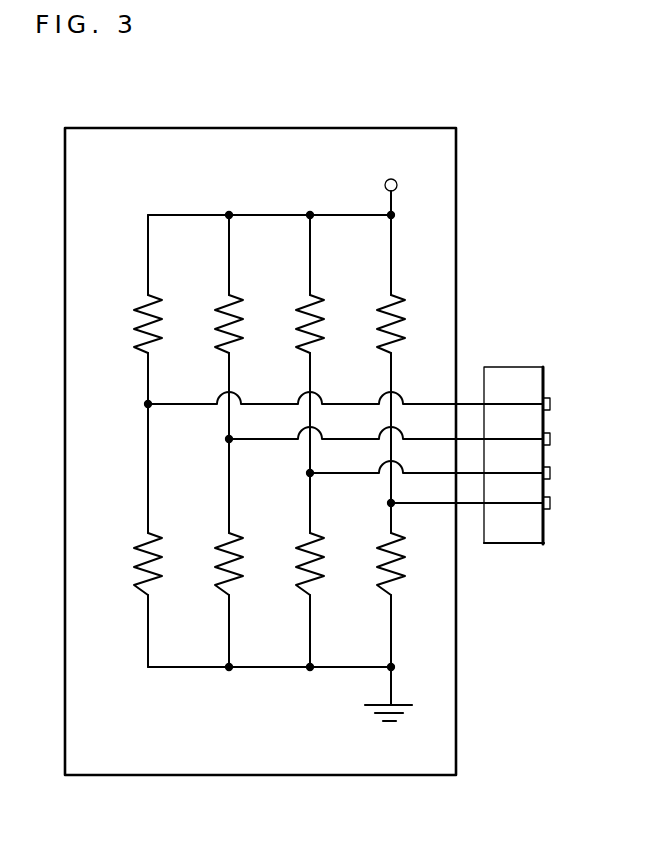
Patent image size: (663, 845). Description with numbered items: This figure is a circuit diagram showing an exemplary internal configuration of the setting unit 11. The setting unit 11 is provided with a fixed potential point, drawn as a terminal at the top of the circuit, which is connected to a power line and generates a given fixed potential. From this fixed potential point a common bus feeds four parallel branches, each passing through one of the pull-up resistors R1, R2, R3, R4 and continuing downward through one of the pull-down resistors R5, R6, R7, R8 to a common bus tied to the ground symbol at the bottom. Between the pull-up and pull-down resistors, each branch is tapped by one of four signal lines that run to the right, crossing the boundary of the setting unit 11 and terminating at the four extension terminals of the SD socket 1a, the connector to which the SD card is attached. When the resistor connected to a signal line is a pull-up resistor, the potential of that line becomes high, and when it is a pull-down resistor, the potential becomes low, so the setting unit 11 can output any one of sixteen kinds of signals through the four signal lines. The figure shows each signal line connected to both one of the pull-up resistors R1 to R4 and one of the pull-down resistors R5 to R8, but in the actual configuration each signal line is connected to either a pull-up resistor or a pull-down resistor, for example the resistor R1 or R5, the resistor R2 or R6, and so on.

The setting unit 11 is at (289, 128).
The SD socket 1a is at (518, 367).
The pull-up resistor R1 is at (140, 300).
The pull-up resistor R2 is at (221, 300).
The pull-up resistor R3 is at (302, 300).
The pull-up resistor R4 is at (383, 300).
The pull-down resistor R5 is at (137, 598).
The pull-down resistor R6 is at (218, 598).
The pull-down resistor R7 is at (298, 598).
The pull-down resistor R8 is at (380, 598).